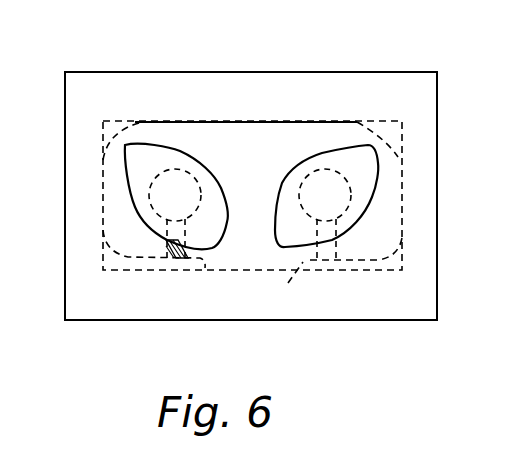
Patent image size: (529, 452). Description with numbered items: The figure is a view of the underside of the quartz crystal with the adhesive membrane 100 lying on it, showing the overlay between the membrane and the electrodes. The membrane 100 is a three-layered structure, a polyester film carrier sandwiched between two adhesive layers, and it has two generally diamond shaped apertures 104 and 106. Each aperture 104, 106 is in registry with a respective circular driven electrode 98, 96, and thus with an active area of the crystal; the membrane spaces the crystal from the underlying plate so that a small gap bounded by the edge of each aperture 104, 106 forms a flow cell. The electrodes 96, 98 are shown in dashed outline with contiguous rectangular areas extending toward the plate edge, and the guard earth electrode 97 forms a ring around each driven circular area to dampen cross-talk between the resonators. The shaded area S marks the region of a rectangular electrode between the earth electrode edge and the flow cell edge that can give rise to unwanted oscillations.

The electrode 96 is at (150, 210).
The guard earth electrode 97 is at (240, 130).
The electrode 98 is at (332, 190).
The membrane 100 is at (402, 268).
The aperture 104 is at (125, 156).
The aperture 106 is at (378, 175).
The shaded area S is at (173, 252).